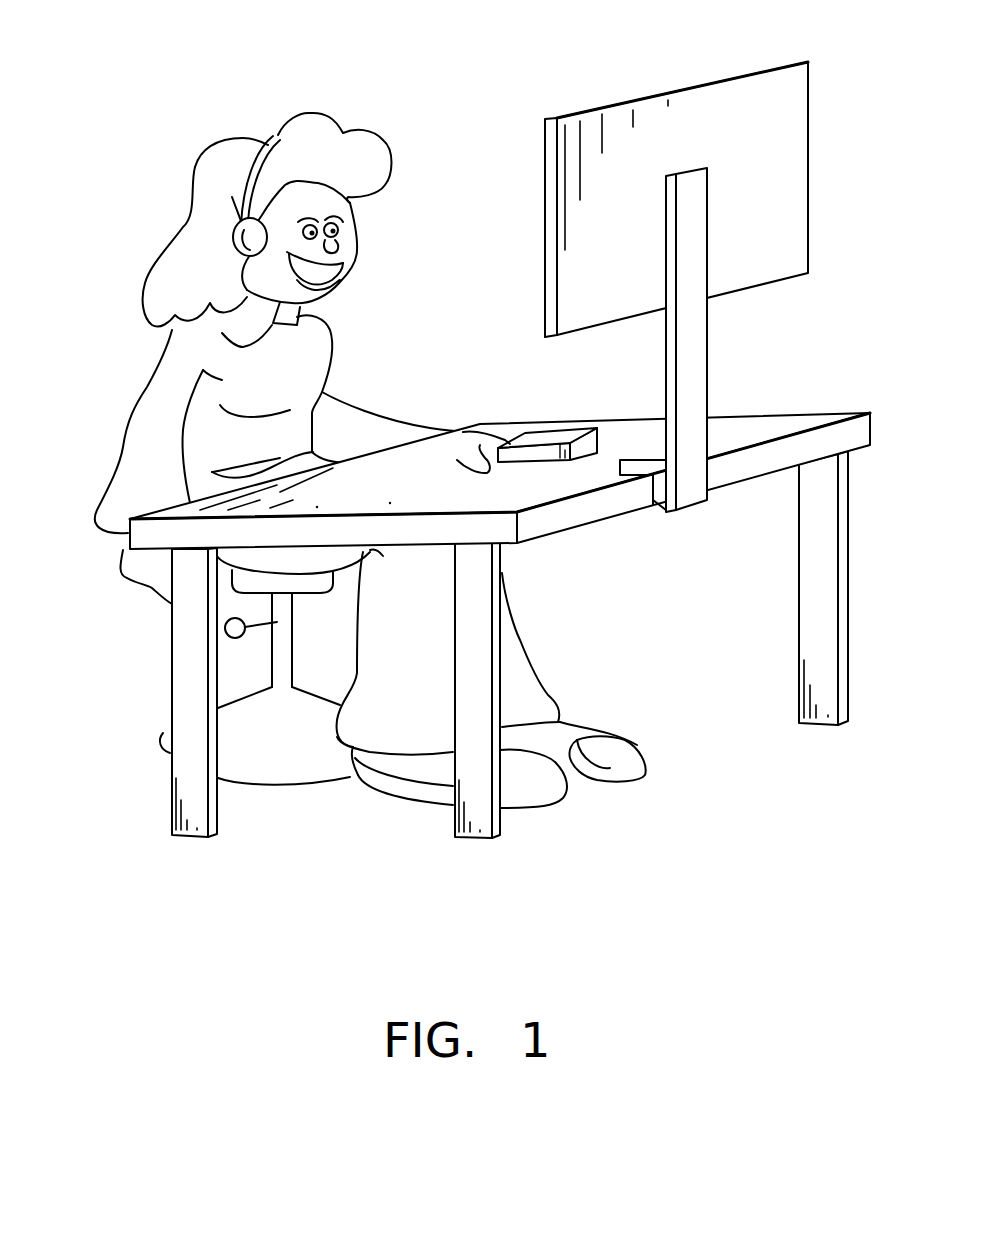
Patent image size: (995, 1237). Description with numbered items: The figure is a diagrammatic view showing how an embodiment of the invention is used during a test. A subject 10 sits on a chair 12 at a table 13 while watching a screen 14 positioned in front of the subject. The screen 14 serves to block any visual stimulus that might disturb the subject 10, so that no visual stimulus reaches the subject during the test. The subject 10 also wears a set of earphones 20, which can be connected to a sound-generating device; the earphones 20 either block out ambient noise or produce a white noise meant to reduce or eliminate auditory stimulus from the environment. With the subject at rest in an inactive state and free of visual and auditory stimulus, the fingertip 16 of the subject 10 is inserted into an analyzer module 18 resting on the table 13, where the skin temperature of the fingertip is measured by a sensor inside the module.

The subject 10 is at (123, 375).
The chair 12 is at (283, 770).
The table 13 is at (790, 422).
The screen 14 is at (748, 75).
The fingertip 16 is at (567, 416).
The analyzer module 18 is at (577, 421).
The earphones 20 is at (273, 138).